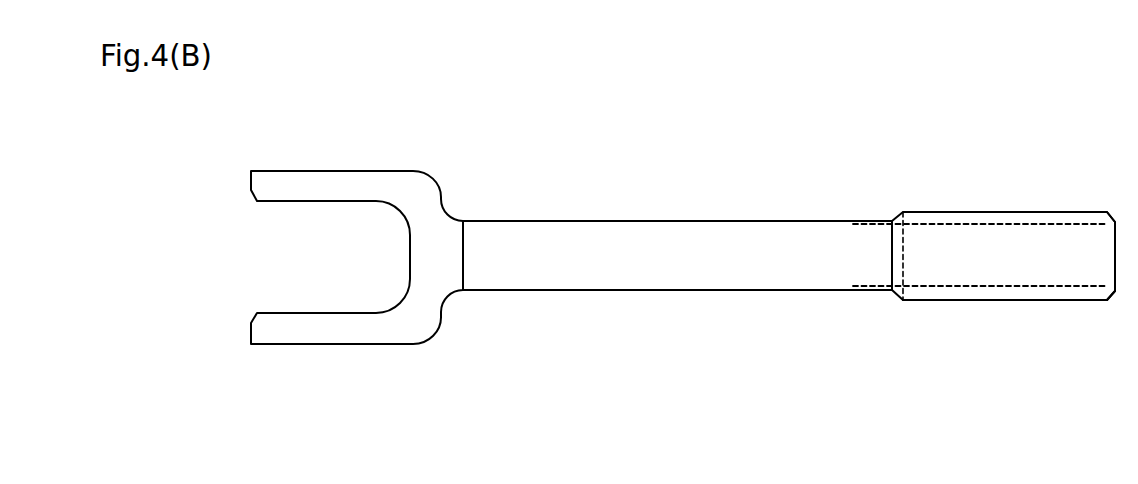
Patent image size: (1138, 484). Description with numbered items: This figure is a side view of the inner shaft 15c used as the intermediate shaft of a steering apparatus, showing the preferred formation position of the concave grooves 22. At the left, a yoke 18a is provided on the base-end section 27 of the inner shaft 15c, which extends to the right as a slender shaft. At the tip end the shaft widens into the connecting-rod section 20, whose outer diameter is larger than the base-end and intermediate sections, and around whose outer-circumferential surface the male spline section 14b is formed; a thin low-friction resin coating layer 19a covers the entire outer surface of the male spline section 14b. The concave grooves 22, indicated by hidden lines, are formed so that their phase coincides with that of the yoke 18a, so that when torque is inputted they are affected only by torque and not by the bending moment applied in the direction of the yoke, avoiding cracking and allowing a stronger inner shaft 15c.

The yoke 18a is at (332, 187).
The base-end section 27 is at (505, 243).
The concave grooves 22 is at (860, 223).
The inner shaft 15c is at (948, 207).
The male spline section 14b is at (1078, 220).
The coating layer 19a is at (953, 268).
The connecting-rod section 20 is at (1083, 270).